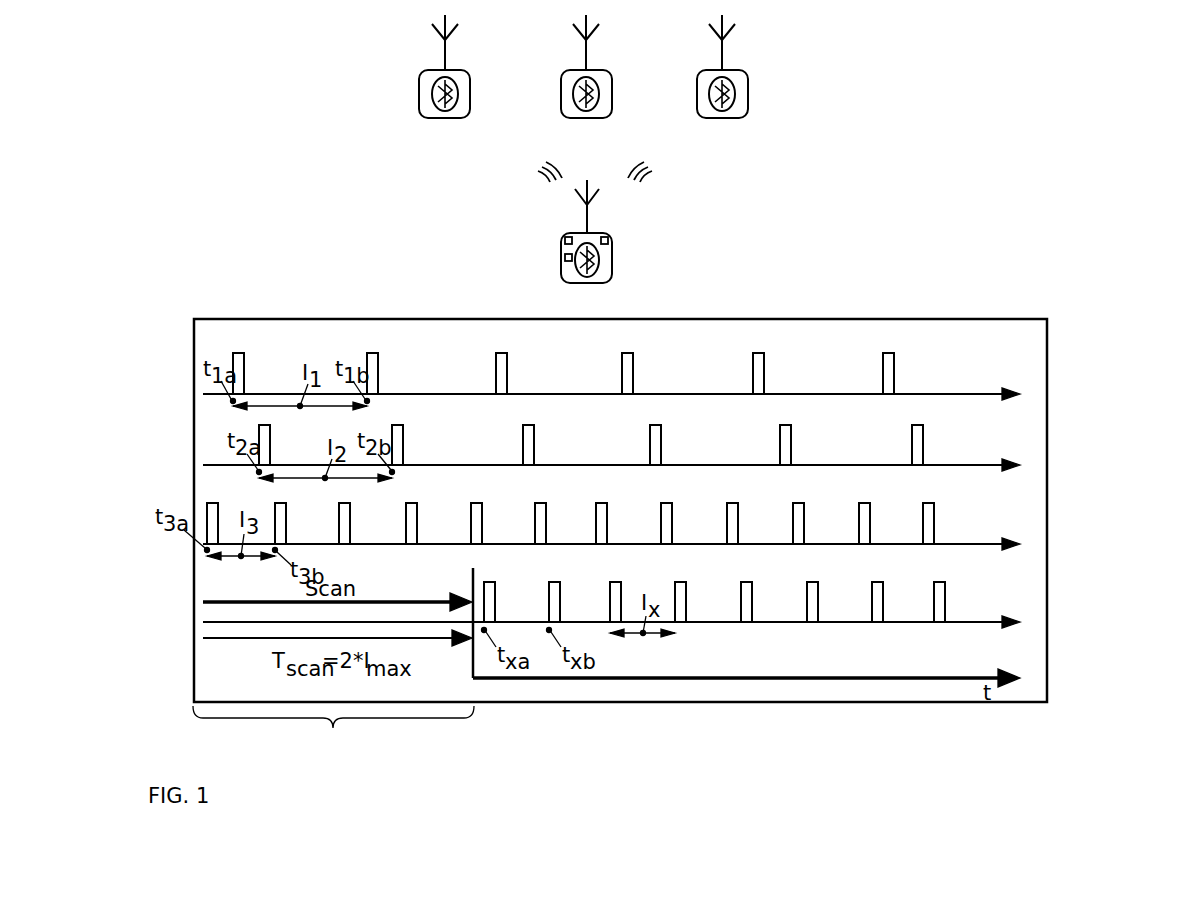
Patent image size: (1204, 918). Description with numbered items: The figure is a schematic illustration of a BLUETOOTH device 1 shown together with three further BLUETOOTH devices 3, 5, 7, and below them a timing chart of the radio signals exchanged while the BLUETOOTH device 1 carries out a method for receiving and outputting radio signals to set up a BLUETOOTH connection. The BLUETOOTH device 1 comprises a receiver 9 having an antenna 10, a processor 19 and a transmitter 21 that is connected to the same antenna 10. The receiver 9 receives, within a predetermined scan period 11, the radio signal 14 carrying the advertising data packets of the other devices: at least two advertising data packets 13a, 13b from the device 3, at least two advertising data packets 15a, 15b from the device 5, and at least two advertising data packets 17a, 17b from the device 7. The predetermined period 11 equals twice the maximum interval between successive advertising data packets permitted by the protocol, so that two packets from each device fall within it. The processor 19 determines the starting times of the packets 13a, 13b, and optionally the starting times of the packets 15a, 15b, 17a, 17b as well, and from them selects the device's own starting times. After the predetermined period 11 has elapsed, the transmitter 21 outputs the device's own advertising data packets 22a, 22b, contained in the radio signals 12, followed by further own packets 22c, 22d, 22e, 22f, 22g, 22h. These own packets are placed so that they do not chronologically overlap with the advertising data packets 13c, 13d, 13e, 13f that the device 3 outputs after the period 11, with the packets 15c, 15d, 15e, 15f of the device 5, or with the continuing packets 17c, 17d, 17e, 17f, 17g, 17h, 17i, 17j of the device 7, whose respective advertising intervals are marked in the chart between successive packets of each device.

The BLUETOOTH device 1 is at (636, 234).
The BLUETOOTH device 3 is at (408, 58).
The BLUETOOTH device 5 is at (548, 58).
The BLUETOOTH device 7 is at (688, 58).
The receiver 9 is at (566, 240).
The antenna 10 is at (598, 198).
The predetermined period Tscan 11 is at (333, 733).
The radio signals 12 is at (536, 174).
The radio signal 14 is at (637, 162).
The processor 19 is at (566, 261).
The transmitter 21 is at (608, 246).
The advertising data packet 13a is at (238, 375).
The advertising data packet 13b is at (372, 375).
The advertising data packet 13c is at (501, 375).
The advertising data packet 13d is at (627, 375).
The advertising data packet 13e is at (758, 375).
The advertising data packet 13f is at (888, 375).
The advertising data packet 15a is at (264, 446).
The advertising data packet 15b is at (397, 446).
The advertising data packet 15c is at (528, 446).
The advertising data packet 15d is at (655, 446).
The advertising data packet 15e is at (785, 446).
The advertising data packet 15f is at (917, 446).
The advertising data packet 17a is at (212, 524).
The advertising data packet 17b is at (280, 524).
The advertising data packet 17c is at (344, 524).
The advertising data packet 17d is at (411, 524).
The advertising data packet 17e is at (476, 524).
The advertising data packet 17f is at (540, 524).
The advertising data packet 17g is at (601, 524).
The advertising data packet 17h is at (666, 524).
The advertising data packet 17i is at (732, 524).
The advertising data packet 17j is at (798, 524).
The advertising data packet 22a is at (489, 604).
The advertising data packet 22b is at (554, 604).
The advertising data packet 22c is at (615, 604).
The advertising data packet 22d is at (680, 604).
The advertising data packet 22e is at (746, 604).
The advertising data packet 22f is at (812, 604).
The advertising data packet 22g is at (877, 604).
The advertising data packet 22h is at (939, 604).